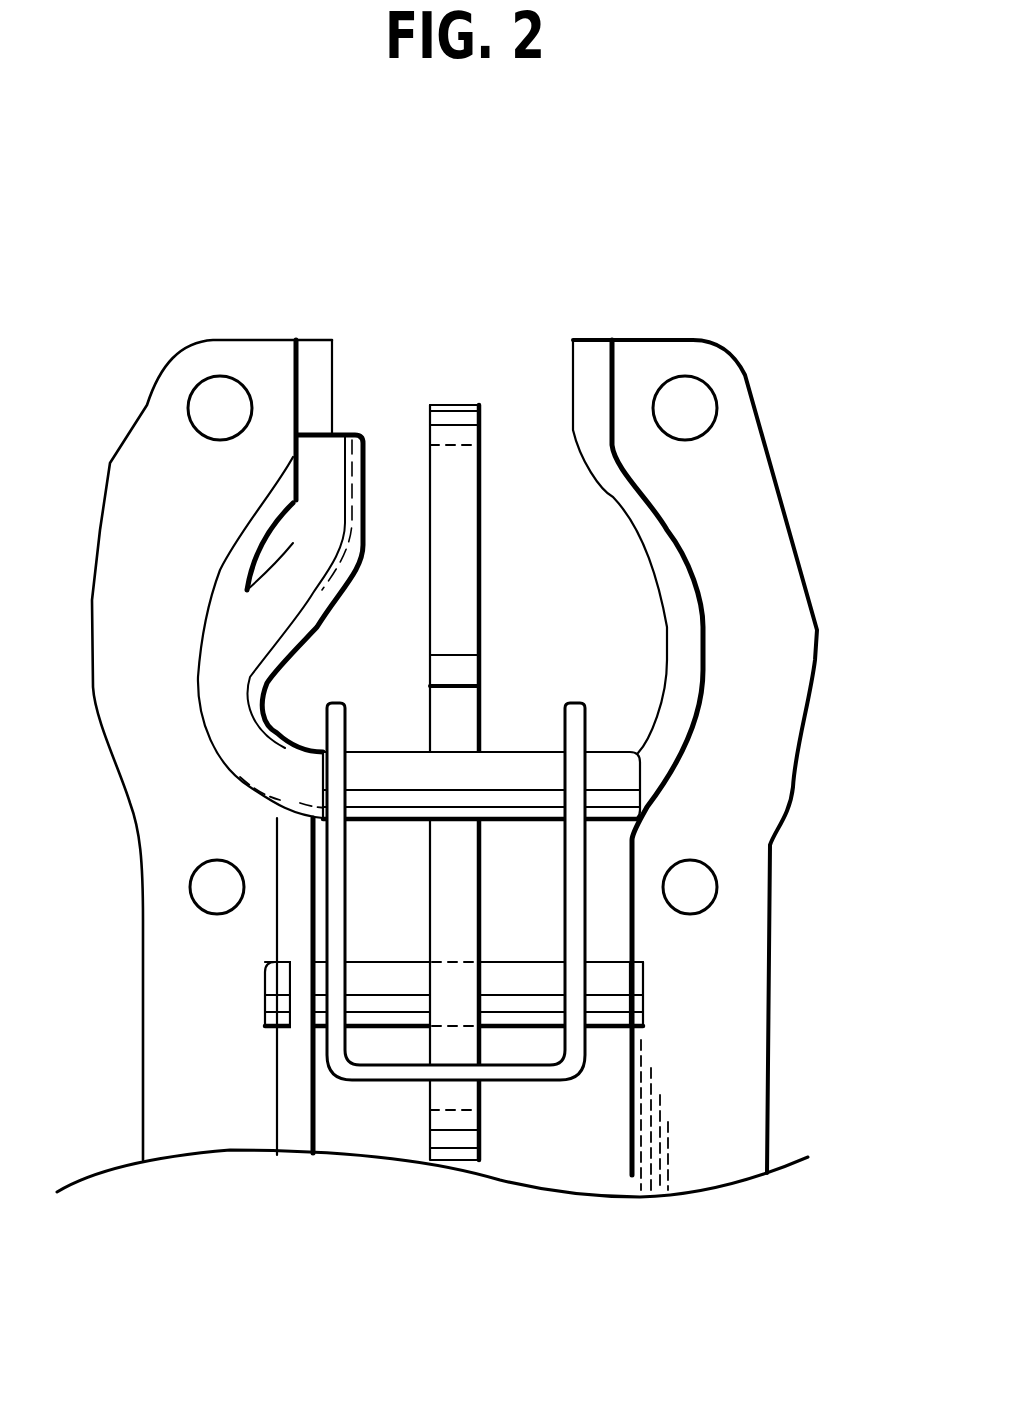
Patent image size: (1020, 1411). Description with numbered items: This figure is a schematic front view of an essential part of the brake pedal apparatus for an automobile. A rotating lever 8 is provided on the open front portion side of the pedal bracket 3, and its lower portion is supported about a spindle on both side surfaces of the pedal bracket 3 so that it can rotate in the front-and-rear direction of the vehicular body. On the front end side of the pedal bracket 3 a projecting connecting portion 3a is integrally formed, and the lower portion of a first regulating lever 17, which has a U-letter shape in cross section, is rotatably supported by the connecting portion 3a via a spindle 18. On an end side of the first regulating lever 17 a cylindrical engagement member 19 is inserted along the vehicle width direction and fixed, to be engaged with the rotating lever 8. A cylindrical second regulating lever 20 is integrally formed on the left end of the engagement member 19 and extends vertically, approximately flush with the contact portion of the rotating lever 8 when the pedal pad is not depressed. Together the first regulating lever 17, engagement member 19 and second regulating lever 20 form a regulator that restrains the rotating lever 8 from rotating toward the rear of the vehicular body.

The pedal bracket 3 is at (650, 355).
The connecting portion 3a is at (290, 992).
The rotating lever 8 is at (452, 410).
The first regulating lever 17 is at (361, 1083).
The spindle 18 is at (527, 1003).
The engagement member 19 is at (530, 750).
The second regulating lever 20 is at (352, 440).